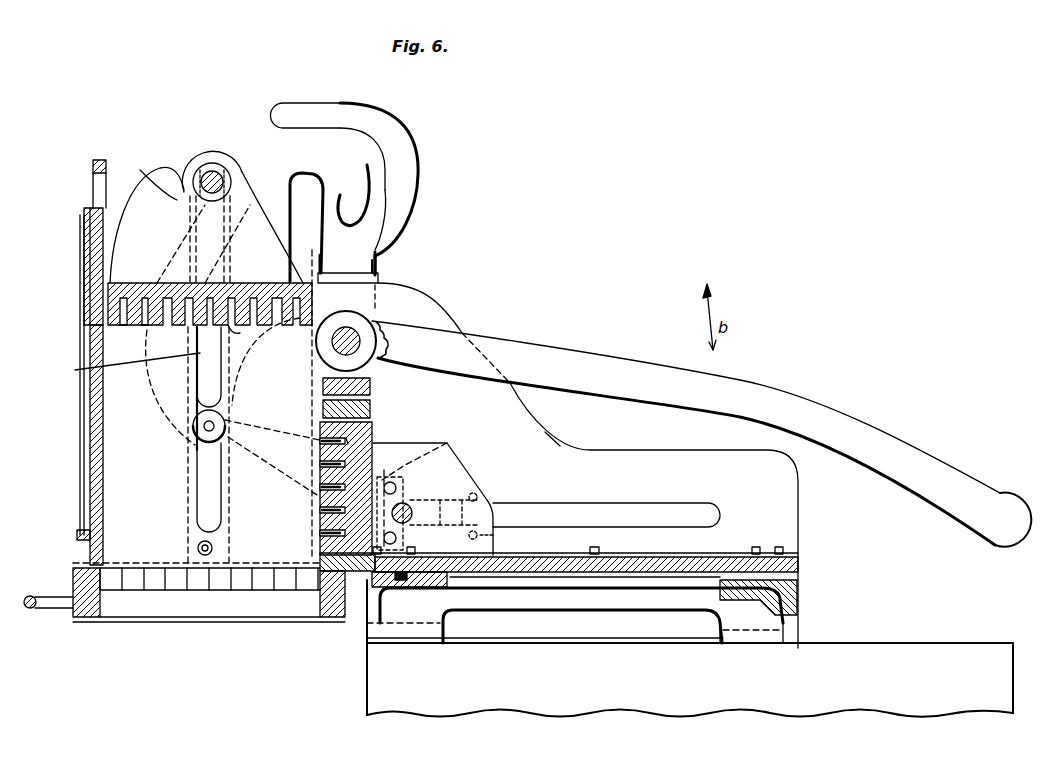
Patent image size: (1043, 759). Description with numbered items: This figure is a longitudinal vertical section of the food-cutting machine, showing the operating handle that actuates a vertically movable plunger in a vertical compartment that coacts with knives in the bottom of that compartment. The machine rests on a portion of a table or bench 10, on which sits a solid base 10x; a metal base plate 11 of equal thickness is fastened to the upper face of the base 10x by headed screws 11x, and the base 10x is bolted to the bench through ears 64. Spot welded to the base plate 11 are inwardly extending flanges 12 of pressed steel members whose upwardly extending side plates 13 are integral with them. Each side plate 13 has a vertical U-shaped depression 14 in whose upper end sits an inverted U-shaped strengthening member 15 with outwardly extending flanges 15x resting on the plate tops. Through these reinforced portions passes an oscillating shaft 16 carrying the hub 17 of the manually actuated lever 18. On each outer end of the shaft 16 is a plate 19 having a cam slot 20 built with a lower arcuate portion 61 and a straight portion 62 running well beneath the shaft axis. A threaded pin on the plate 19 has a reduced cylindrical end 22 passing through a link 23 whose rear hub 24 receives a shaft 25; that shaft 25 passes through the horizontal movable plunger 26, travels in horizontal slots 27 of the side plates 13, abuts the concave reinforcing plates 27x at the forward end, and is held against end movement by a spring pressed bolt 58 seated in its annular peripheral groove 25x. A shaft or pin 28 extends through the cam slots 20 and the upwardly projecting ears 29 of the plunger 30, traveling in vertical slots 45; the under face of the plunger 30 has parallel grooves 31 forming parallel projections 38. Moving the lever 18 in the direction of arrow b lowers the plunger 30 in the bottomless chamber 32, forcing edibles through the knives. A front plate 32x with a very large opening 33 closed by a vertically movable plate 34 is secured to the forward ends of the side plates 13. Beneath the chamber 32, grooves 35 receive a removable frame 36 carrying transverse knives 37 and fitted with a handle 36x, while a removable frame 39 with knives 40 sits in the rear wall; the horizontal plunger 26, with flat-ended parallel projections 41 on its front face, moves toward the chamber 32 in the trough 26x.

The table or bench 10 is at (838, 652).
The base 10x is at (800, 604).
The metal base plate 11 is at (800, 568).
The headed screws 11x is at (757, 592).
The inwardly extending flanges 12 is at (688, 560).
The side plates 13 is at (665, 452).
The vertical U-shaped depression 14 is at (380, 295).
The inverted U-shaped strengthening member 15 is at (372, 386).
The outwardly extending flanges 15x is at (372, 268).
The oscillating shaft 16 is at (372, 322).
The hub 17 is at (382, 340).
The manually actuated lever 18 is at (620, 362).
The plate 19 is at (418, 162).
The cam slot 20 is at (360, 135).
The reduced cylindrical end 22 is at (215, 425).
The link 23 is at (196, 445).
The hub 24 is at (200, 460).
The shaft 25 is at (410, 508).
The annular peripheral groove 25x is at (186, 488).
The horizontal movable plunger 26 is at (372, 438).
The trough 26x is at (552, 442).
The horizontal slots 27 is at (603, 512).
The reinforcing plates 27x is at (452, 442).
The shaft or pin 28 is at (216, 175).
The upwardly projecting ears 29 is at (206, 215).
The plunger 30 is at (108, 300).
The parallel grooves 31 is at (128, 326).
The bottomless chamber 32 is at (110, 410).
The front plate 32x is at (86, 280).
The opening 33 is at (80, 452).
The plate 34 is at (92, 212).
The grooves 35 is at (78, 566).
The removable frame 36 is at (72, 580).
The handle 36x is at (55, 606).
The knives 37 is at (268, 592).
The parallel projections 38 is at (242, 340).
The removable frame 39 is at (372, 408).
The knives 40 is at (322, 535).
The parallel projections 41 is at (322, 438).
The vertical slots 45 is at (122, 366).
The spring pressed bolt 58 is at (497, 536).
The lower arcuate portion 61 is at (322, 120).
The straight portion 62 is at (368, 192).
The ears 64 is at (450, 622).